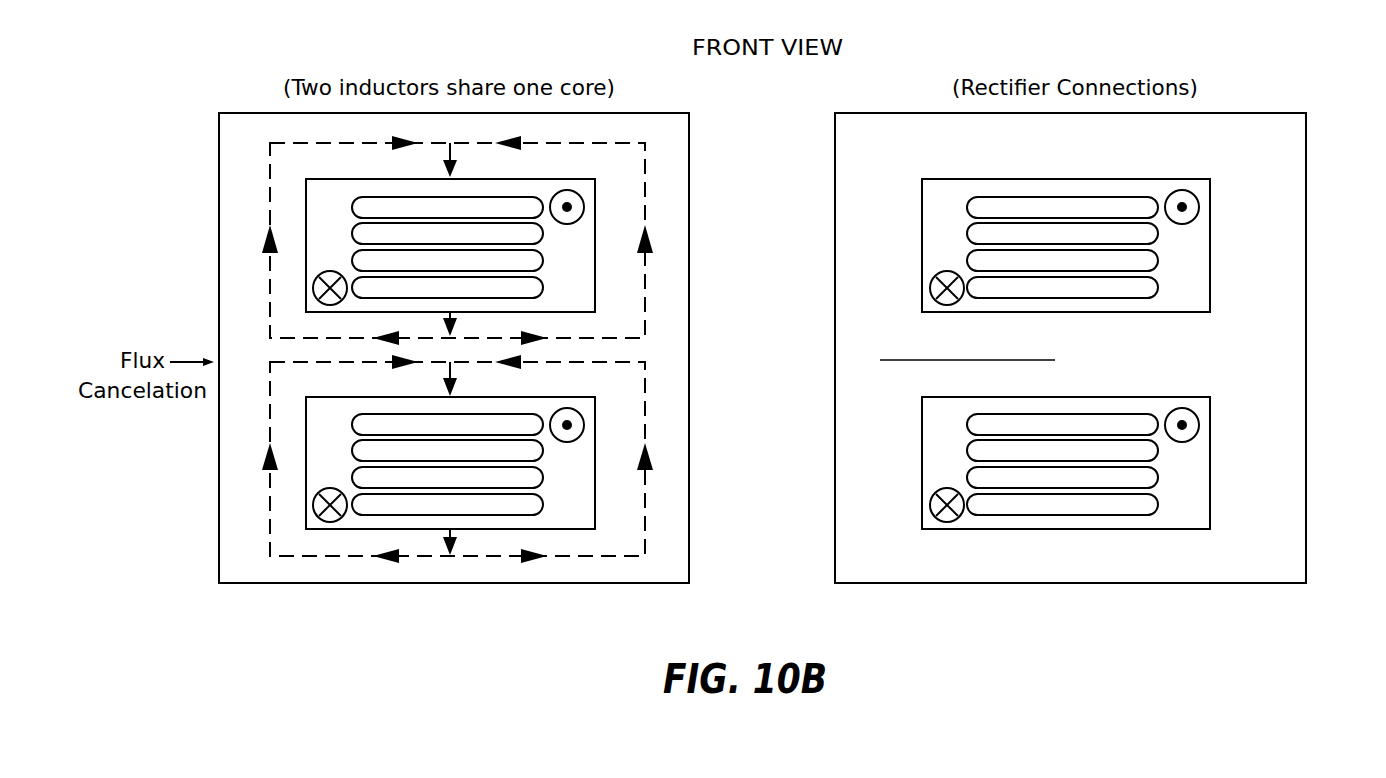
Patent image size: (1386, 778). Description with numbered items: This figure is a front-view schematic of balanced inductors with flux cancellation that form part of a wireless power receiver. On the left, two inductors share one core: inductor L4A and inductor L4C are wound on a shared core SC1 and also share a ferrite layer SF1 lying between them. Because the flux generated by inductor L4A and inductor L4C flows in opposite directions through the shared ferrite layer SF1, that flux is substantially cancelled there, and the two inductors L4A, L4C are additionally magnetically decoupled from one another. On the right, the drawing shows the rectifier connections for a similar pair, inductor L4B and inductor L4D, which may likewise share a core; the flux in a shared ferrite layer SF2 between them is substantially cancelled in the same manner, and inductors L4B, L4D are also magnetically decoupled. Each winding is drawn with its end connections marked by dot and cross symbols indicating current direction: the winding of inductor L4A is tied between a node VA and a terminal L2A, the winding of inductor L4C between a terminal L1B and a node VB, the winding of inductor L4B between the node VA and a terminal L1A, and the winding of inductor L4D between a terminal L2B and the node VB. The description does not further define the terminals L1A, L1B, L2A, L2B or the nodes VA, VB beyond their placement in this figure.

The core SC1 is at (417, 195).
The shared ferrite layer SF1 is at (452, 350).
The shared ferrite layer SF2 is at (880, 360).
The inductor L4A is at (431, 257).
The inductor L4B is at (1047, 257).
The inductor L4C is at (431, 474).
The inductor L4D is at (1047, 474).
The inductor terminal L1A is at (1197, 196).
The inductor terminal L1B is at (313, 505).
The inductor terminal L2A is at (582, 196).
The inductor terminal L2B is at (930, 505).
The voltage node VA terminal VA is at (313, 288).
The voltage node VB terminal VB is at (583, 416).